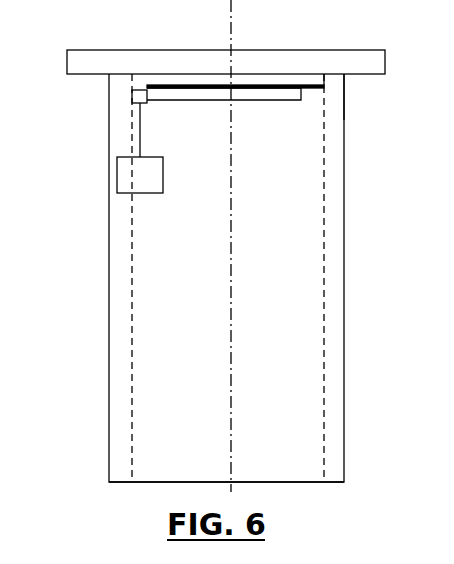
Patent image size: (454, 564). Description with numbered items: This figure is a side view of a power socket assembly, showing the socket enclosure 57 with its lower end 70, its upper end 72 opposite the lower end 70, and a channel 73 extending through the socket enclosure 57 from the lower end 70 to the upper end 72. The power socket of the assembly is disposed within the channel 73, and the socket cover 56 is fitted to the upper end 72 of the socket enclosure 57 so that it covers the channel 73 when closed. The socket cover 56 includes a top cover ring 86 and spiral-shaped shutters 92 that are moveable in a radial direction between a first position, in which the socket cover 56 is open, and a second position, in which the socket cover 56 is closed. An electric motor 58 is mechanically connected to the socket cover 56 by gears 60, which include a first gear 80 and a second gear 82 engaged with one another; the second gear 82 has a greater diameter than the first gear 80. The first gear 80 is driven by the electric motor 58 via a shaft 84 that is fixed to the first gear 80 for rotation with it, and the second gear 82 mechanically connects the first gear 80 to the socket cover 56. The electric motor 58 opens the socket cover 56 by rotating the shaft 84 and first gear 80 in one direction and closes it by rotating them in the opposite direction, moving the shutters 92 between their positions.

The socket cover 56 is at (92, 49).
The socket enclosure 57 is at (109, 280).
The electric motor 58 is at (117, 173).
The gears 60 is at (360, 100).
The lower end 70 is at (124, 485).
The upper end 72 is at (120, 73).
The channel 73 is at (322, 240).
The first gear 80 is at (132, 97).
The second gear 82 is at (304, 95).
The shaft 84 is at (138, 127).
The top cover ring 86 is at (301, 82).
The shutters 92 is at (258, 2).